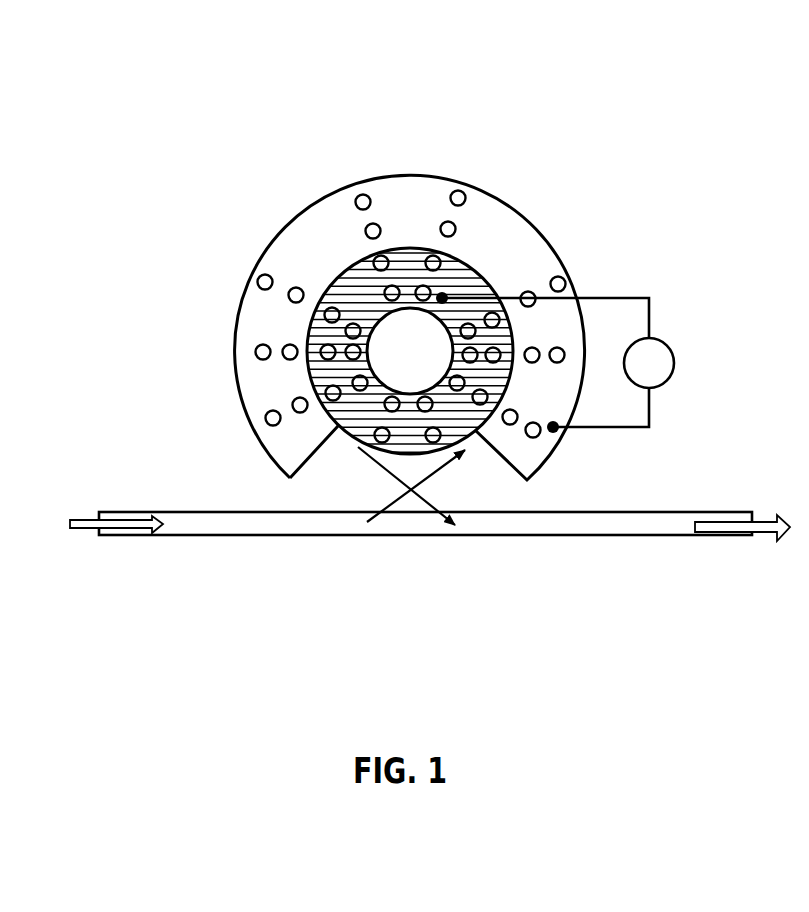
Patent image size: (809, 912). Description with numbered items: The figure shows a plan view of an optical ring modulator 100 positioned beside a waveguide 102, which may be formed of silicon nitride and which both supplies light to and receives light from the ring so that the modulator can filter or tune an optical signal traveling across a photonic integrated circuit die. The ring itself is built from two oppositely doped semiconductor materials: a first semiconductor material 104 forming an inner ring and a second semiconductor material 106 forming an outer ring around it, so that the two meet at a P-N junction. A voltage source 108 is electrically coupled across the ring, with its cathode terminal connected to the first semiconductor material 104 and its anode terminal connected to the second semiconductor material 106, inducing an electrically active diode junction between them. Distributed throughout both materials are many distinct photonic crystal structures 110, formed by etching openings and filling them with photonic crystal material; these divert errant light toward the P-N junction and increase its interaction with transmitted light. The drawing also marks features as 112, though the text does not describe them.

The optical ring modulator 100 is at (255, 120).
The waveguide 102 is at (273, 532).
The first semiconductor material 104 is at (480, 275).
The second semiconductor material 106 is at (473, 218).
The voltage source 108 is at (668, 343).
The photonic crystal structures 110 is at (265, 282).
The electrodes 112 is at (442, 298).